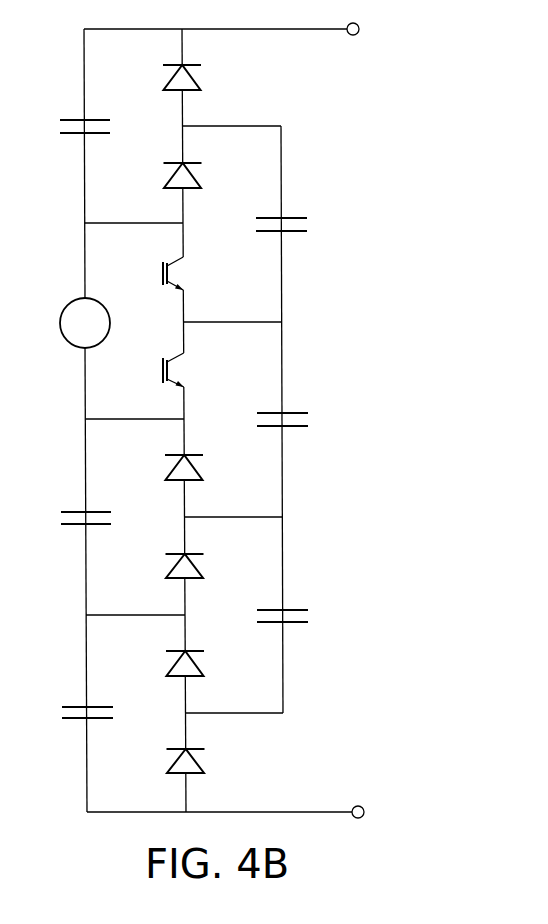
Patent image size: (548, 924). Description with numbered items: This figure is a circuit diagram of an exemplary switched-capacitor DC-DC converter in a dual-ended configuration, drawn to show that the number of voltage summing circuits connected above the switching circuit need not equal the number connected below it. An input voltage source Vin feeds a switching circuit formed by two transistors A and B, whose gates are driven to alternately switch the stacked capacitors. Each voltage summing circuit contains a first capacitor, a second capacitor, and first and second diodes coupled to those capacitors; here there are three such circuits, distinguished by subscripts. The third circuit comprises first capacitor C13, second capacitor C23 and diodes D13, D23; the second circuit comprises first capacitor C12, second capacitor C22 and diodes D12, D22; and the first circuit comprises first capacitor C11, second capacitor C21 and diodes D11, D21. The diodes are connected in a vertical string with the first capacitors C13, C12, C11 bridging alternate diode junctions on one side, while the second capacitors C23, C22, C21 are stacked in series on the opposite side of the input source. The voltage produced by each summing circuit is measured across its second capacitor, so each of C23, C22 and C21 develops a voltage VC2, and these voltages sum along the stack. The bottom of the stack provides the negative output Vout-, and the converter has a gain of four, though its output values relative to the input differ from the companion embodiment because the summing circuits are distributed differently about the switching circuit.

The voltage across capacitor C2 VC2 is at (45, 32).
The negative output voltage Vout- is at (364, 797).
The input voltage Vin is at (85, 324).
The upper switching transistor A is at (163, 273).
The lower switching transistor B is at (163, 372).
The second diode D23 is at (205, 79).
The first diode D13 is at (206, 177).
The second diode D22 is at (208, 469).
The first diode D12 is at (208, 568).
The first diode D11 is at (208, 665).
The second diode D21 is at (209, 763).
The second capacitor C23 is at (65, 128).
The second capacitor C22 is at (65, 520).
The second capacitor C21 is at (67, 715).
The first capacitor C13 is at (303, 226).
The first capacitor C12 is at (304, 421).
The first capacitor C11 is at (304, 618).